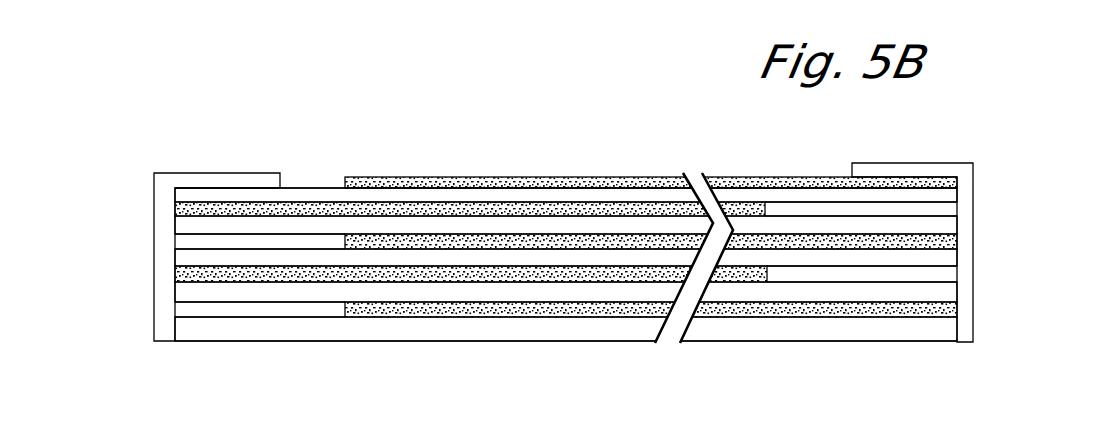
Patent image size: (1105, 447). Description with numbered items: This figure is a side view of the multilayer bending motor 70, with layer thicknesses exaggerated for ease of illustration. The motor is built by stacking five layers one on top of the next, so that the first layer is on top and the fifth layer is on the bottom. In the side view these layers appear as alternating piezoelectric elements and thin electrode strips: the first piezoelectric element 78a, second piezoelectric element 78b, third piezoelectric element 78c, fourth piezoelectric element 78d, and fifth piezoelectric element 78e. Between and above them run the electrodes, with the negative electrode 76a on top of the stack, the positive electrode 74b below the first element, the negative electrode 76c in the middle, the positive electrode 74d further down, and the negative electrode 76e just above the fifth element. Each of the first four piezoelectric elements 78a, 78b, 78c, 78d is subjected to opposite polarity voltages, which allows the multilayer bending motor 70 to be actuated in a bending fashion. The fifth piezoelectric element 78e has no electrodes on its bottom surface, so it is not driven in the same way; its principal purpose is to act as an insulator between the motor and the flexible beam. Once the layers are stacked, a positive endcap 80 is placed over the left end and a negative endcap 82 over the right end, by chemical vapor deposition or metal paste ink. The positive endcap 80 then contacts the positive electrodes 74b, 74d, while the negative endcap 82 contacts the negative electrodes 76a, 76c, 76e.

The multilayer bending motor 70 is at (268, 158).
The positive endcap 80 is at (166, 187).
The negative endcap 82 is at (906, 172).
The positive electrode 74b is at (186, 204).
The positive electrode 74d is at (186, 272).
The negative electrode 76a is at (955, 182).
The negative electrode 76c is at (948, 246).
The negative electrode 76e is at (950, 313).
The first piezoelectric element 78a is at (945, 198).
The second piezoelectric element 78b is at (943, 229).
The third piezoelectric element 78c is at (943, 266).
The fourth piezoelectric element 78d is at (943, 296).
The fifth piezoelectric element 78e is at (943, 333).